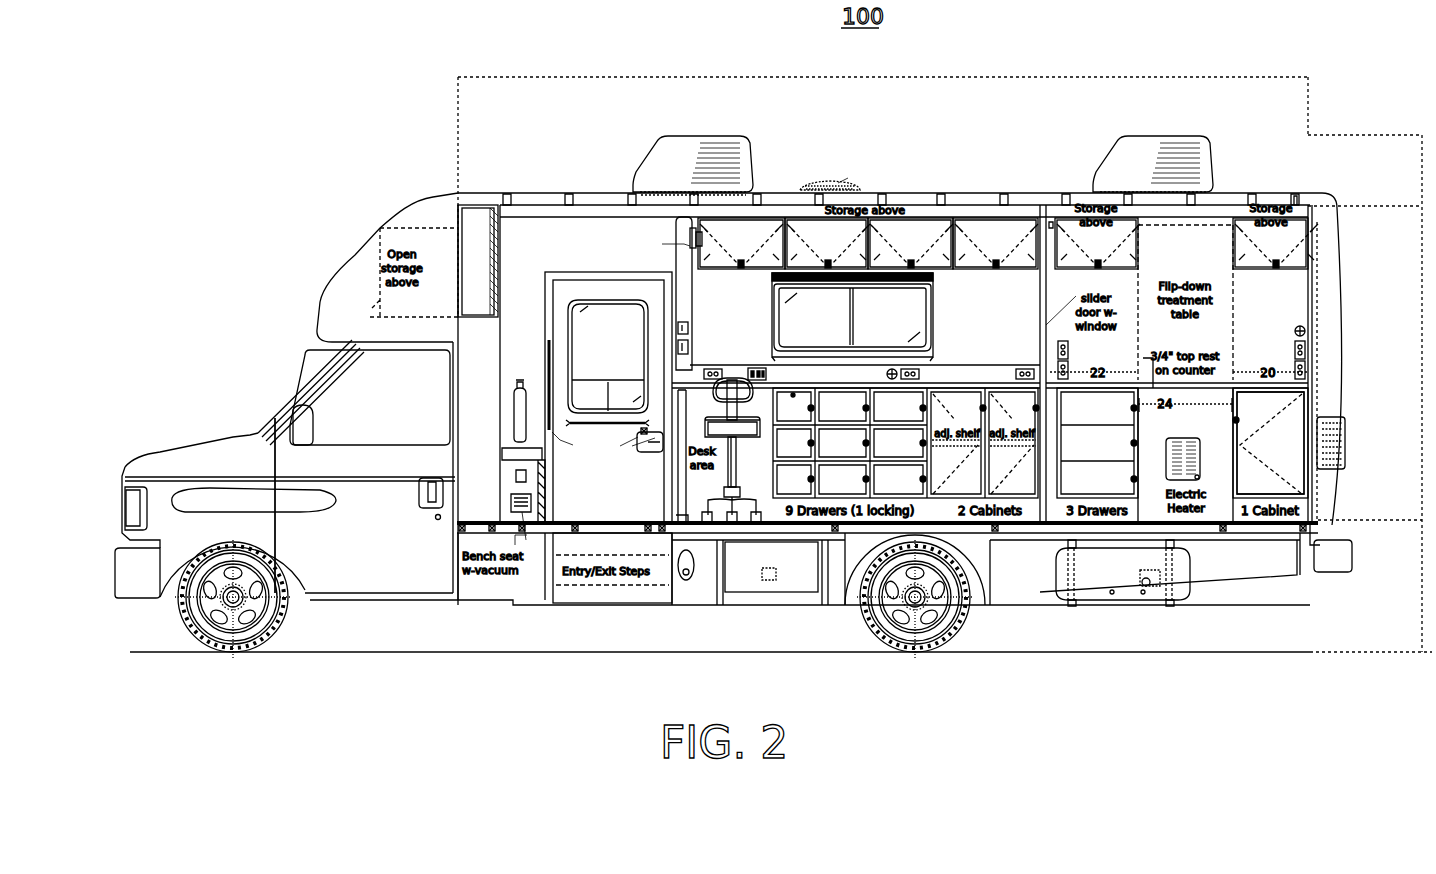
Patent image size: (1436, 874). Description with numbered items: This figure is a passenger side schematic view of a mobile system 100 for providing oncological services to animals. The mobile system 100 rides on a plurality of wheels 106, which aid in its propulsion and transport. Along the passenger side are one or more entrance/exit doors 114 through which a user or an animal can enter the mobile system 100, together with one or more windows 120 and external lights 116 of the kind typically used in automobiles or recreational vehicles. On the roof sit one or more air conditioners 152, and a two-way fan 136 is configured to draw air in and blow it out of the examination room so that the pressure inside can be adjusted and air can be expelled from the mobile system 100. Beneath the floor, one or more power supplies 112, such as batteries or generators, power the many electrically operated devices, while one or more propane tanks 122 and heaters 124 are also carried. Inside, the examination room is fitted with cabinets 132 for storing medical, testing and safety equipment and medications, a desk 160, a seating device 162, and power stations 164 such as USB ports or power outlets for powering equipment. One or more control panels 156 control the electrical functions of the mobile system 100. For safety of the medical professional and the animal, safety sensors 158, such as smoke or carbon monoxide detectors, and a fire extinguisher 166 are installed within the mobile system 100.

The mobile system 100 is at (733, 399).
The wheels 106 is at (278, 612).
The power supplies 112 is at (725, 585).
The entrance/exit doors 114 is at (345, 530).
The external lights 116 is at (128, 497).
The windows 120 is at (633, 322).
The propane tanks 122 is at (1170, 592).
The heaters 124 is at (1180, 440).
The cabinets 132 is at (1300, 405).
The two-way fans 136 is at (826, 180).
The air conditioners 152 is at (740, 138).
The control panels 156 is at (472, 210).
The safety sensors 158 is at (700, 240).
The desks 160 is at (776, 384).
The seating devices 162 is at (755, 430).
The power stations 164 is at (760, 370).
The fire extinguishers 166 is at (520, 415).